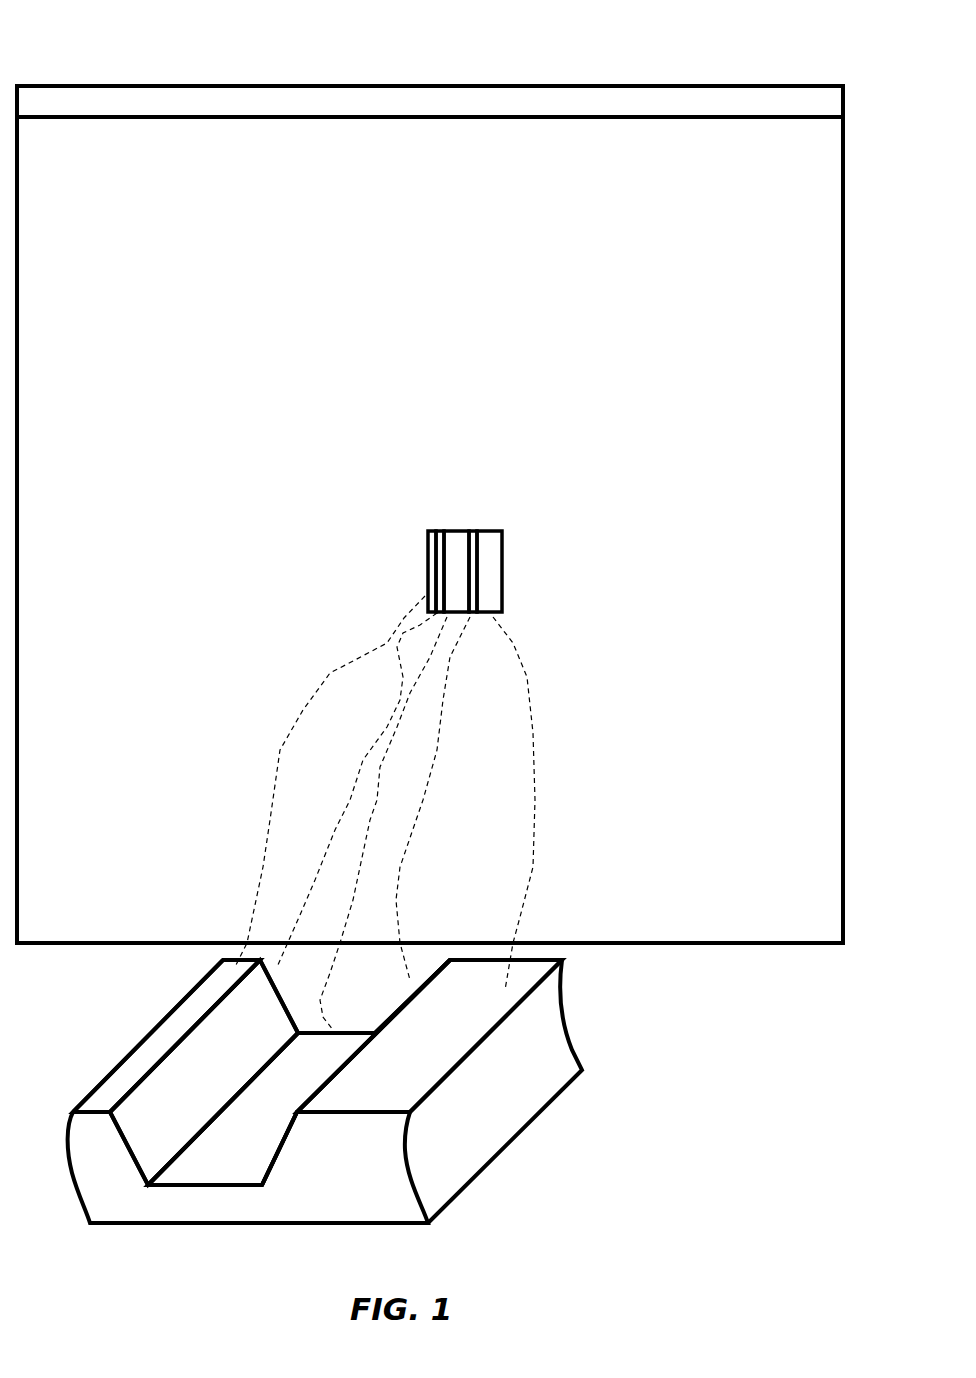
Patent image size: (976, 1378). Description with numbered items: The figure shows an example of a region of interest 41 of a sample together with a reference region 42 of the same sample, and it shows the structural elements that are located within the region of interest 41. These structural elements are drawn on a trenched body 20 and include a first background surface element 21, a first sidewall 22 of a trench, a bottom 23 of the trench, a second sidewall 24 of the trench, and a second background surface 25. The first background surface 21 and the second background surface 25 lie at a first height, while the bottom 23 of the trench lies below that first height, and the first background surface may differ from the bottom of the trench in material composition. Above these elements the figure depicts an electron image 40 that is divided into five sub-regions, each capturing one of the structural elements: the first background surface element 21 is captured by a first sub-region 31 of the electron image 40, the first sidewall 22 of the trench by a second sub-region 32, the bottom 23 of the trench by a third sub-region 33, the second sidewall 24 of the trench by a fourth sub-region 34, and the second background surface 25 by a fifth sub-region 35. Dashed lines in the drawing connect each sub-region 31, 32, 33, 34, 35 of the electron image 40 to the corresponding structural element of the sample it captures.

The workpiece 20 is at (381, 1123).
The first background surface element 21 is at (120, 1078).
The first sidewall of the trench 22 is at (191, 1104).
The bottom of the trench 23 is at (255, 1160).
The second sidewall of the trench 24 is at (278, 1157).
The second background surface 25 is at (447, 1054).
The first sub-region 31 is at (428, 550).
The second sub-region 32 is at (440, 530).
The third sub-region 33 is at (457, 530).
The fourth sub-region 34 is at (473, 530).
The fifth sub-region 35 is at (493, 530).
The electron image 40 is at (430, 544).
The region of interest 41 is at (69, 891).
The reference region 42 is at (72, 85).